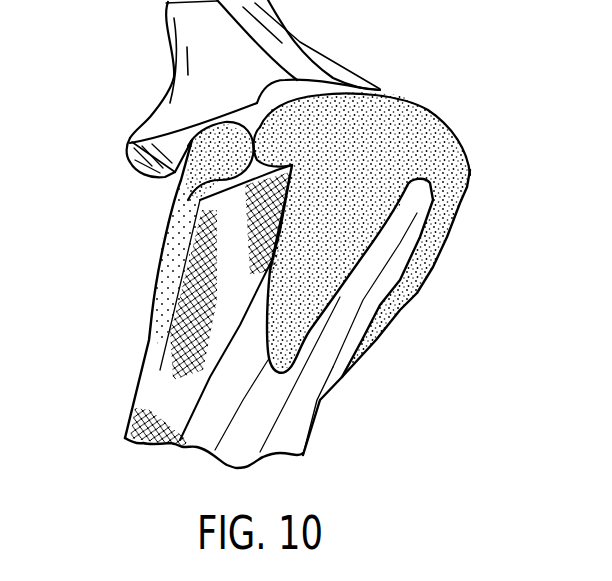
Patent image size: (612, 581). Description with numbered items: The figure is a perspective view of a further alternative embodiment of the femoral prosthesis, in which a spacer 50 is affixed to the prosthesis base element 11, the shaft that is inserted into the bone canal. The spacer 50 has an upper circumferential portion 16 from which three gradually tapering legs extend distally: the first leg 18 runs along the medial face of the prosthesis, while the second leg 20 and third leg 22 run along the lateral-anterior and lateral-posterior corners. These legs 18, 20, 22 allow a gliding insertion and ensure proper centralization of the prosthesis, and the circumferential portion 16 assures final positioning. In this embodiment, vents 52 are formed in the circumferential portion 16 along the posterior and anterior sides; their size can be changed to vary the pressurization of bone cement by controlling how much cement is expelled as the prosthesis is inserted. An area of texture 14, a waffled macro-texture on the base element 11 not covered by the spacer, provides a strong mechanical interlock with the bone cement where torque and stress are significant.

The prosthesis base element 11 is at (290, 424).
The area of texture 14 is at (153, 347).
The circumferential portion 16 is at (454, 150).
The first leg 18 is at (161, 238).
The second leg 20 is at (300, 350).
The third leg 22 is at (408, 296).
The spacer 50 is at (385, 125).
The vents 52 is at (313, 74).